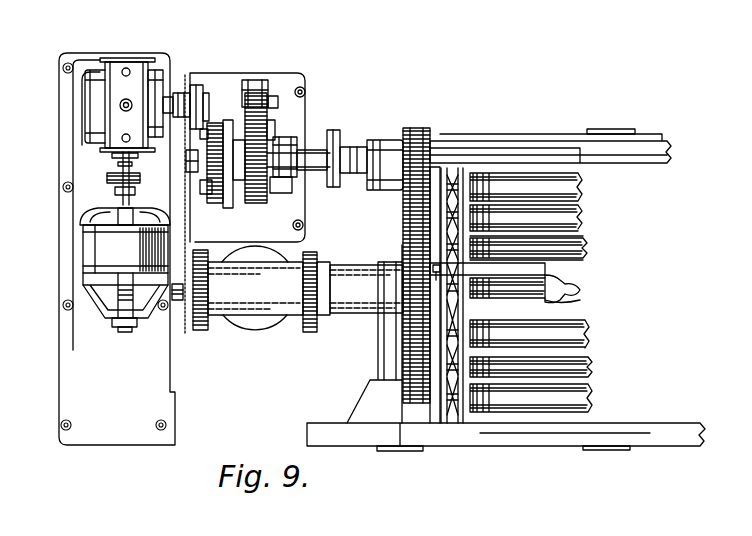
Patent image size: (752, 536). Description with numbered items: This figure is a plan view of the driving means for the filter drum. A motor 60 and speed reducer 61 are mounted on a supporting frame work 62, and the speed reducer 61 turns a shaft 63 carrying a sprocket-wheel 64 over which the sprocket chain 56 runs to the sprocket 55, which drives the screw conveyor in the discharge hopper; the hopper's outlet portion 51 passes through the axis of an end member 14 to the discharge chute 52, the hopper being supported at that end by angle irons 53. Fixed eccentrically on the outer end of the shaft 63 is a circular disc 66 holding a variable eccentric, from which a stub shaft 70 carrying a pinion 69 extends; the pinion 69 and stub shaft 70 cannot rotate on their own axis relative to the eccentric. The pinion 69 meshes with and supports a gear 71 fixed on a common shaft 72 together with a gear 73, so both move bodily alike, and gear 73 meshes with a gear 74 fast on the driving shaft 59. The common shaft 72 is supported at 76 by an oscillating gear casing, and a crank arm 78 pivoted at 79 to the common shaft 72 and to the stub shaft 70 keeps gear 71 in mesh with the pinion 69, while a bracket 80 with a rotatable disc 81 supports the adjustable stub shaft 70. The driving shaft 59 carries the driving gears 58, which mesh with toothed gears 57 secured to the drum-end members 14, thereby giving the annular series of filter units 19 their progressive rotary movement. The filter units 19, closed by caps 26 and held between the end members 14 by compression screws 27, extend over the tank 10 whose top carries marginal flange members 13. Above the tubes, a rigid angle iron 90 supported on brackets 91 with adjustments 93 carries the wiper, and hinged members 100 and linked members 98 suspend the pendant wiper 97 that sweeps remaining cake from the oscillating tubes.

The tank 10 is at (605, 425).
The marginal flange members 13 is at (540, 435).
The drum-end members 14 is at (440, 350).
The filter units 19 is at (541, 281).
The caps 26 is at (488, 420).
The compression screws 27 is at (475, 335).
The outlet portion 51 is at (366, 289).
The discharge chute 52 is at (262, 328).
The supporting angle irons 53 is at (372, 333).
The sprocket 55 is at (185, 300).
The sprocket chain 56 is at (207, 270).
The toothed gears 57 is at (407, 248).
The driving gears 58 is at (417, 128).
The driving shaft 59 is at (318, 172).
The motor 60 is at (95, 249).
The speed reducer 61 is at (110, 124).
The supporting frame work 62 is at (68, 199).
The shaft 63 is at (181, 97).
The sprocket-wheel 64 is at (198, 100).
The circular disc 66 is at (209, 100).
The pinion 69 is at (210, 128).
The stub shaft 70 is at (238, 122).
The gear 71 is at (186, 160).
The common shaft 72 is at (258, 200).
The gear 73 is at (285, 193).
The gear 74 is at (290, 140).
The shaft support 76 is at (200, 188).
The crank arm 78 is at (271, 128).
The pivot 79 is at (212, 268).
The bracket 80 is at (274, 100).
The rotatable disc 81 is at (260, 95).
The angle iron 90 is at (580, 296).
The rigid brackets 91 is at (437, 237).
The adjustments 93 is at (436, 282).
The pendant wiper 97 is at (487, 258).
The linked members 98 is at (487, 250).
The members 100 is at (490, 269).